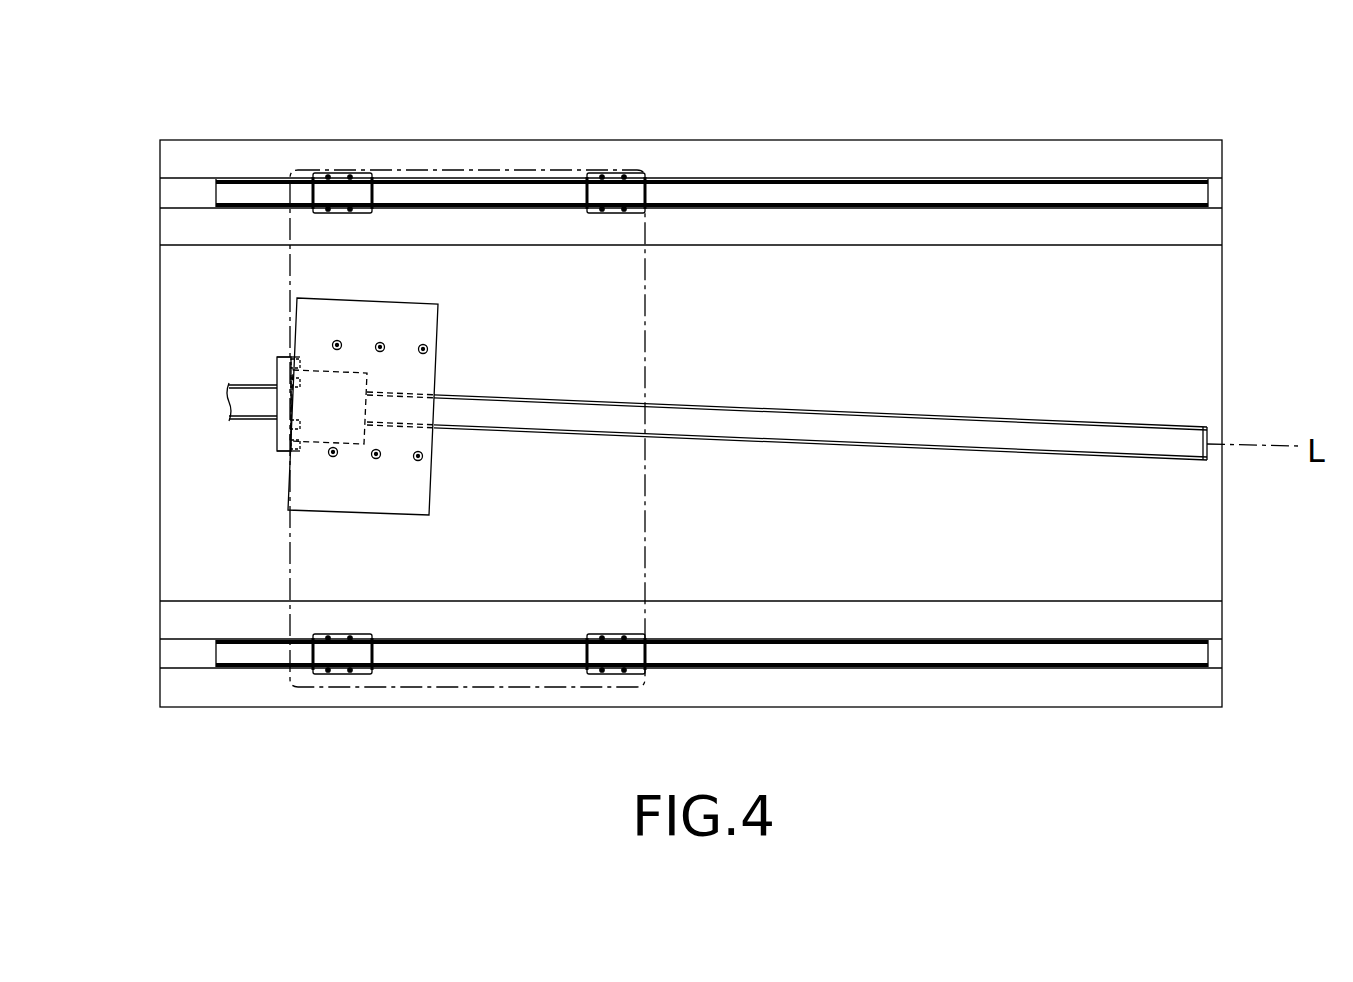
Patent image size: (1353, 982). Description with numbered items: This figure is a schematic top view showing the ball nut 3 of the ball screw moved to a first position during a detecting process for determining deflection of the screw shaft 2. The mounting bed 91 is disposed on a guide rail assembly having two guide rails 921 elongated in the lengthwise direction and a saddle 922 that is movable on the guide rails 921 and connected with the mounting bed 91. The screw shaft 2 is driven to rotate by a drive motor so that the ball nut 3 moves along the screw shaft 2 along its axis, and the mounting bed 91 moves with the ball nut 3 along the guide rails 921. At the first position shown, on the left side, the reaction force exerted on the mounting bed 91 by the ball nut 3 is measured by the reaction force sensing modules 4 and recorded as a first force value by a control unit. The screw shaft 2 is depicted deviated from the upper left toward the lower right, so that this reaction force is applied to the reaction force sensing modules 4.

The screw shaft 2 is at (1172, 409).
The ball nut 3 is at (257, 433).
The reaction force sensing modules 4 is at (263, 360).
The mounting bed 91 is at (408, 300).
The guide rails 921 is at (982, 195).
The saddle 922 is at (540, 168).